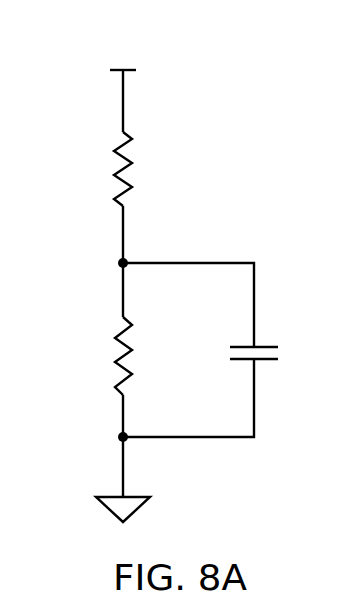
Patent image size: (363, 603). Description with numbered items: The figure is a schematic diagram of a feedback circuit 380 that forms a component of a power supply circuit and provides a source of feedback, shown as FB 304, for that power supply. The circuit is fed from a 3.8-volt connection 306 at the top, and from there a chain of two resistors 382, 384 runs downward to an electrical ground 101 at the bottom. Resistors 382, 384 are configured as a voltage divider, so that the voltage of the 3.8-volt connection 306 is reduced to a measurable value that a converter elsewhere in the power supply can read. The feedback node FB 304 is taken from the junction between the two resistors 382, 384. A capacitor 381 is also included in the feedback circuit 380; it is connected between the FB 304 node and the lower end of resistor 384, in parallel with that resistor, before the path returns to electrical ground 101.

The feedback circuit 380 is at (46, 95).
The 3.8-volt connection 306 is at (152, 58).
The resistor 382 is at (126, 154).
The FB 304 is at (237, 232).
The resistor 384 is at (119, 352).
The capacitor 381 is at (266, 362).
The electrical ground 101 is at (110, 494).